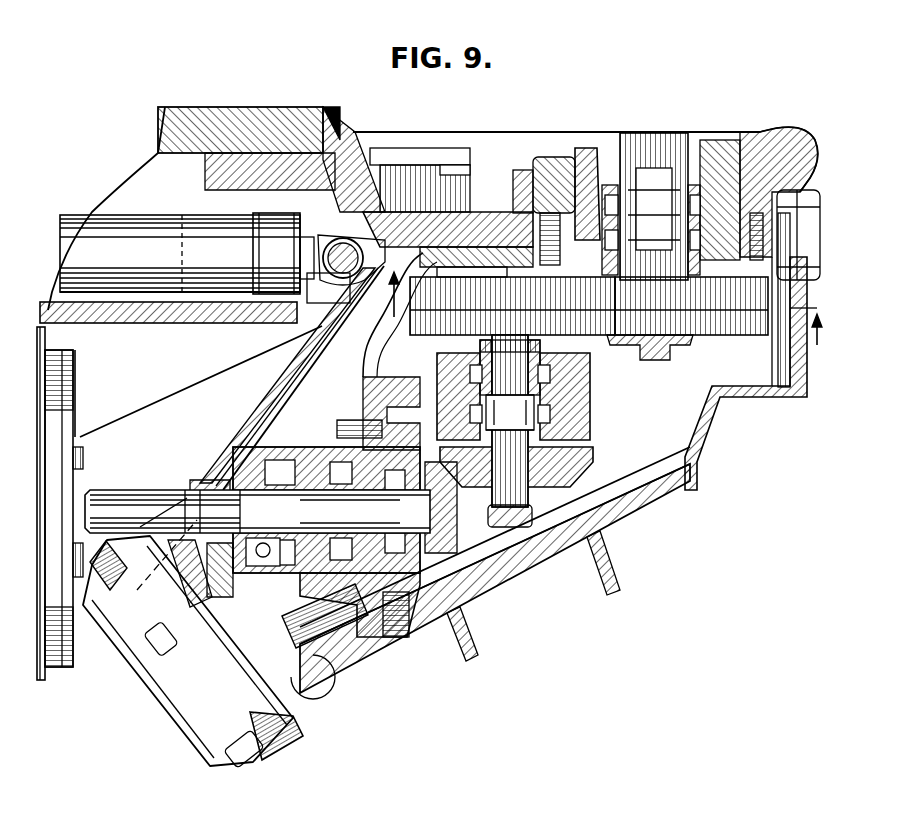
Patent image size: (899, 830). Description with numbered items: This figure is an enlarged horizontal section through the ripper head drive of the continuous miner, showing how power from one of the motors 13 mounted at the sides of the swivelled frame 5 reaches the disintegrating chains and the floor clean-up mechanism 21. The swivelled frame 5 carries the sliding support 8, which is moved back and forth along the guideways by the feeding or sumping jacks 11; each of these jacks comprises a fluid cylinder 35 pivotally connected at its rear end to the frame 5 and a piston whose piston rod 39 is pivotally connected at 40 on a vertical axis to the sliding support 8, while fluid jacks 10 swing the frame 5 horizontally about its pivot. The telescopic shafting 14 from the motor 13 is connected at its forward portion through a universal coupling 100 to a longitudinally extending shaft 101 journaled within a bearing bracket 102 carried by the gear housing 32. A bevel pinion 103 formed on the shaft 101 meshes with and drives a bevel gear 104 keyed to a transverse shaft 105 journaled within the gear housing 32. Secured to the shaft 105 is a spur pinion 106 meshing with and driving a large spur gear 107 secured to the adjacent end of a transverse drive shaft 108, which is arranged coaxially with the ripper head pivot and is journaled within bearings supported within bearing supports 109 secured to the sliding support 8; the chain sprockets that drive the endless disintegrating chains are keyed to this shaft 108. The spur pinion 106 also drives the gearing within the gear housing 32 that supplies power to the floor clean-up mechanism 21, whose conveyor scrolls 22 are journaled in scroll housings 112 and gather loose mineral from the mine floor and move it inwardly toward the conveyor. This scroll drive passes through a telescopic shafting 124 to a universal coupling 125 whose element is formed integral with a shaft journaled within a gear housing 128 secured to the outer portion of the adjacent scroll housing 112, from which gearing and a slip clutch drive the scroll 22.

The intermediate swivelled frame 5 is at (193, 310).
The sliding support 8 is at (335, 158).
The fluid jacks 10 is at (415, 282).
The fluid jacks 11 is at (135, 293).
The motors 13 is at (57, 650).
The telescopic shaftings 14 is at (133, 490).
The floor clean-up mechanism 21 is at (292, 745).
The conveyor scrolls 22 is at (320, 680).
The gear housing 32 is at (705, 425).
The fluid cylinders 35 is at (163, 240).
The piston rods 39 is at (313, 240).
The pivotal connection 40 is at (367, 228).
The universal coupling 100 is at (263, 567).
The longitudinally extending shaft 101 is at (377, 510).
The bearing bracket 102 is at (330, 577).
The bevel pinion 103 is at (447, 540).
The bevel gear 104 is at (587, 453).
The transverse shaft 105 is at (578, 397).
The spur pinion 106 is at (497, 322).
The large spur gear 107 is at (731, 320).
The transverse drive shaft 108 is at (650, 200).
The bearing supports 109 is at (590, 205).
The scroll housings 112 is at (360, 633).
The telescopic shafting 124 is at (268, 397).
The universal coupling 125 is at (143, 583).
The gear housing 128 is at (150, 692).